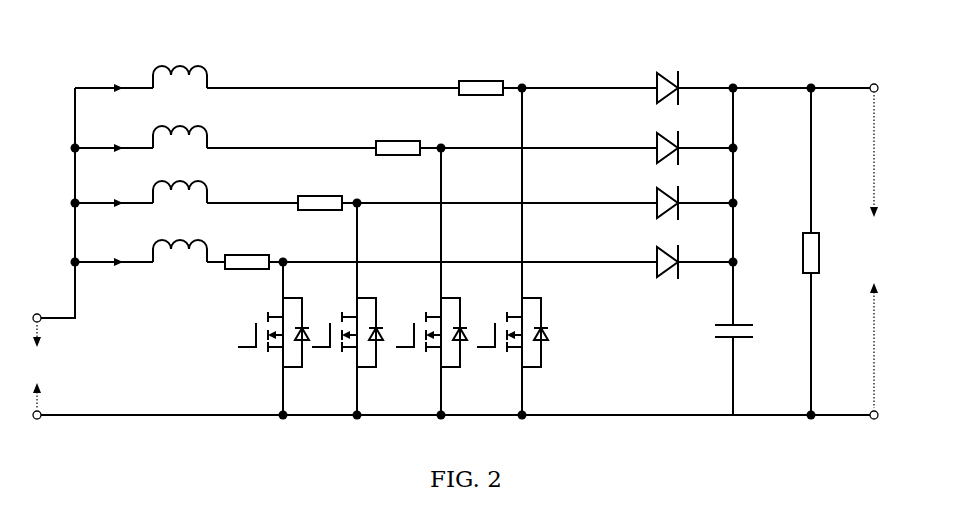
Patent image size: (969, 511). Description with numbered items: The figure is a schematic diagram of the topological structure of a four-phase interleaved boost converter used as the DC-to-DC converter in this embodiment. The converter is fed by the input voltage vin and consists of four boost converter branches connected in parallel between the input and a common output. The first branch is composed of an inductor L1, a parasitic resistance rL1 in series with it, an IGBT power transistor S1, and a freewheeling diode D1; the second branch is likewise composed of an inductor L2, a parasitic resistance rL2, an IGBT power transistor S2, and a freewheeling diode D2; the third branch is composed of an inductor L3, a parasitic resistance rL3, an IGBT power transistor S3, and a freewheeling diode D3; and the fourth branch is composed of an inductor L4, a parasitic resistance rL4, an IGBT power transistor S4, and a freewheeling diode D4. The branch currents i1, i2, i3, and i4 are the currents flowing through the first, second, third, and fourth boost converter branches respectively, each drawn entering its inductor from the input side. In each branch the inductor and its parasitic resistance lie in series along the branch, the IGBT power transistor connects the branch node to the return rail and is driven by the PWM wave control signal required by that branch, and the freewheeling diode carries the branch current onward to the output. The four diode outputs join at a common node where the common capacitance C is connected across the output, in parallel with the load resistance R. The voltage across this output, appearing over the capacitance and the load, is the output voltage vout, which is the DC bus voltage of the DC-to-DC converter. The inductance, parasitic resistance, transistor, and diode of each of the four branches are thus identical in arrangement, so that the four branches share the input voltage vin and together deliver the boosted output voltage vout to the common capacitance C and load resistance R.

The branch current i1 is at (109, 73).
The branch current i2 is at (109, 133).
The branch current i3 is at (109, 188).
The branch current i4 is at (109, 247).
The inductor L1 is at (180, 62).
The inductor L2 is at (180, 122).
The inductor L3 is at (180, 177).
The inductor L4 is at (180, 236).
The parasitic resistance rL1 is at (481, 77).
The parasitic resistance rL2 is at (398, 137).
The parasitic resistance rL3 is at (320, 192).
The parasitic resistance rL4 is at (247, 251).
The freewheeling diode D1 is at (650, 83).
The freewheeling diode D2 is at (650, 143).
The freewheeling diode D3 is at (650, 198).
The freewheeling diode D4 is at (650, 257).
The IGBT power transistor S1 is at (512, 251).
The IGBT power transistor S2 is at (431, 281).
The IGBT power transistor S3 is at (347, 309).
The IGBT power transistor S4 is at (273, 338).
The common capacitance C is at (718, 336).
The load resistance R is at (796, 251).
The input voltage vin is at (36, 366).
The output voltage vout is at (874, 251).